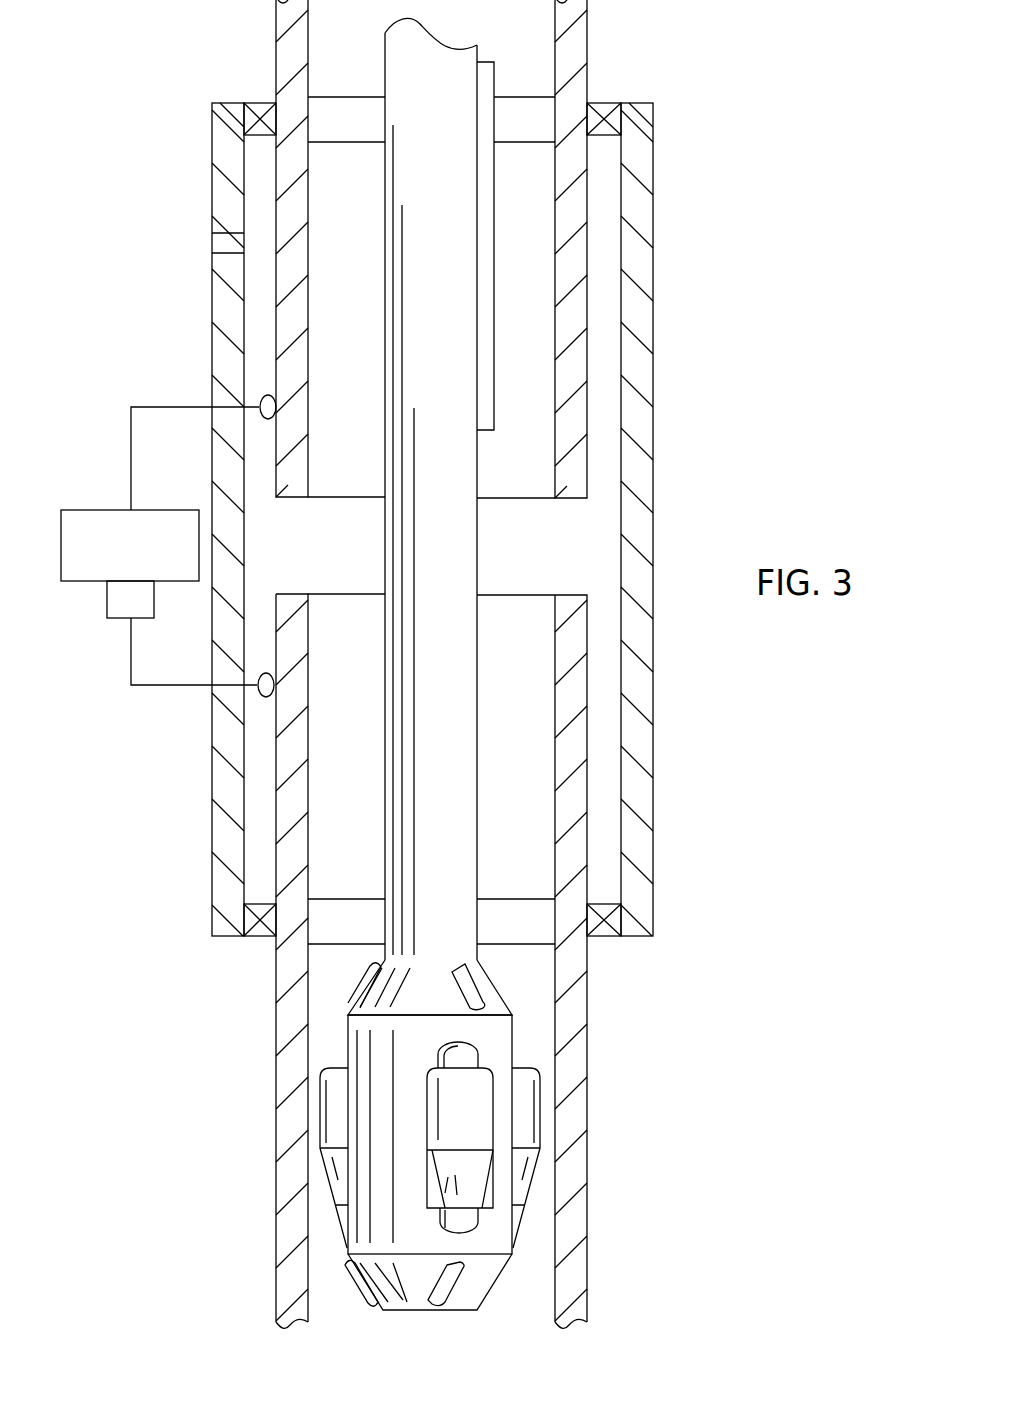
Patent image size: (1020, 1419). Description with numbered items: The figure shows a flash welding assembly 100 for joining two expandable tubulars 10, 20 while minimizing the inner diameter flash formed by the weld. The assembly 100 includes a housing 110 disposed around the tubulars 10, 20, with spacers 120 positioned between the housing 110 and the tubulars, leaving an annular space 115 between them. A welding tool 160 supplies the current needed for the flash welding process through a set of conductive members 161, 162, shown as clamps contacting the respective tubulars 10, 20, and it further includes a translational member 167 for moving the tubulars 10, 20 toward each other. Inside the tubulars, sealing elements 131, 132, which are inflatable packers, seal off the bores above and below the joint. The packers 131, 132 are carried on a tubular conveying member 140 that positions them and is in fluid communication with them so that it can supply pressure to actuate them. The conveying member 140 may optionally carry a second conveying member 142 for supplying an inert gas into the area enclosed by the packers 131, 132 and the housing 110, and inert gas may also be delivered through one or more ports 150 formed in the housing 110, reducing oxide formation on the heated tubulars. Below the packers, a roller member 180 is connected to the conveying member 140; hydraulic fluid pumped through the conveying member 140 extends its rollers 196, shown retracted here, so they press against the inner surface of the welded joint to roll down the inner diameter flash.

The flash welding assembly 100 is at (126, 118).
The expandable tubular 10 is at (587, 719).
The expandable tubular 20 is at (587, 472).
The housing 110 is at (654, 297).
The annulus 115 is at (607, 380).
The spacer 120 is at (605, 103).
The sealing element 131 is at (523, 898).
The sealing element 132 is at (540, 142).
The conveying member 140 is at (385, 58).
The second conveying member 142 is at (494, 80).
The port 150 is at (212, 240).
The welding tool 160 is at (80, 510).
The conductive member 161 is at (257, 700).
The conductive member 162 is at (258, 401).
The translational member 167 is at (130, 599).
The roller member 180 is at (512, 1042).
The roller 196 is at (533, 1197).